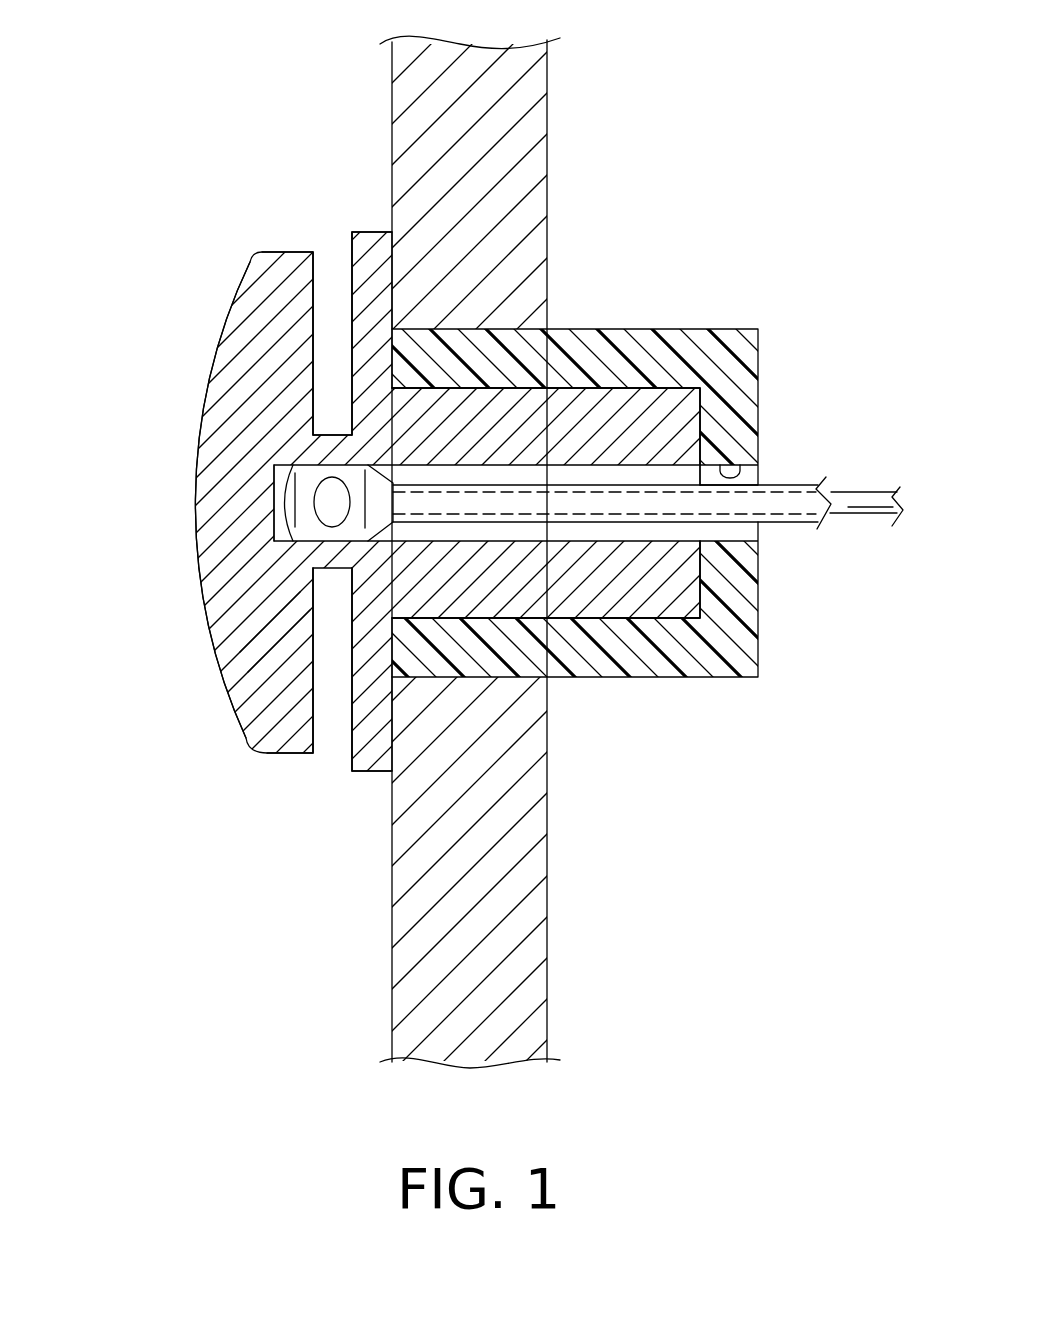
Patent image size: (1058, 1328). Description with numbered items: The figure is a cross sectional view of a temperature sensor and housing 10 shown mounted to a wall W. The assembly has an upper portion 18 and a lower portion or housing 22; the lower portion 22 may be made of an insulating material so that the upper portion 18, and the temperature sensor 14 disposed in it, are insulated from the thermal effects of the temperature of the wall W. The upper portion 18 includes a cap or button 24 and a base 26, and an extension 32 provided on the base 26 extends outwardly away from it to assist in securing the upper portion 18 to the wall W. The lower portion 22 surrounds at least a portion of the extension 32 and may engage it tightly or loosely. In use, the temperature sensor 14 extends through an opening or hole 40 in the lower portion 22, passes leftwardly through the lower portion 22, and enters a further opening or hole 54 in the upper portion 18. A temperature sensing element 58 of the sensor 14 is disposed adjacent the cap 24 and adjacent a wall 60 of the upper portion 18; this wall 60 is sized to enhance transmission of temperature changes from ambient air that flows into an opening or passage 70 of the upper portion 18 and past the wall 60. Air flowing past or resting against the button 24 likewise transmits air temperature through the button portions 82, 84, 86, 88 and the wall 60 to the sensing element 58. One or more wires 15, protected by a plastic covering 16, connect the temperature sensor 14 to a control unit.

The temperature sensor and housing 10 is at (168, 481).
The wall W is at (550, 152).
The temperature sensor 14 is at (536, 444).
The wires 15 is at (852, 508).
The plastic covering 16 is at (780, 523).
The upper portion 18 is at (220, 558).
The lower portion or housing 22 is at (663, 652).
The cap or button 24 is at (250, 712).
The base 26 is at (366, 753).
The extension 32 is at (650, 417).
The opening or hole 40 is at (733, 468).
The opening or hole 54 is at (295, 490).
The temperature sensing element 58 is at (334, 498).
The wall 60 is at (337, 572).
The opening or passage 70 is at (335, 228).
The button portion 82 is at (322, 258).
The button portion 84 is at (320, 745).
The button portion 86 is at (293, 620).
The button portion 88 is at (263, 672).